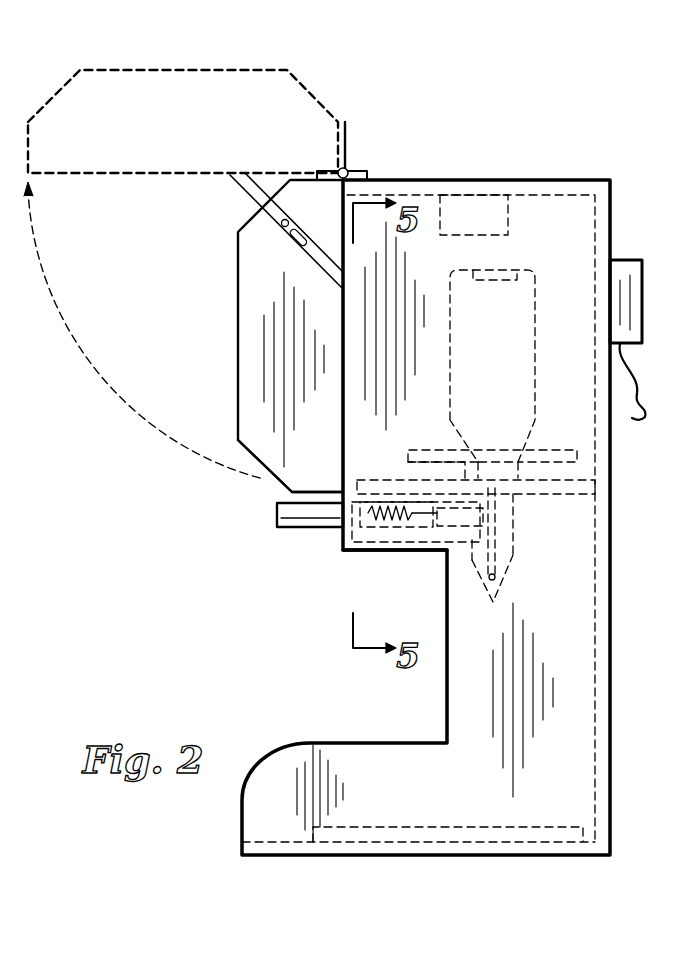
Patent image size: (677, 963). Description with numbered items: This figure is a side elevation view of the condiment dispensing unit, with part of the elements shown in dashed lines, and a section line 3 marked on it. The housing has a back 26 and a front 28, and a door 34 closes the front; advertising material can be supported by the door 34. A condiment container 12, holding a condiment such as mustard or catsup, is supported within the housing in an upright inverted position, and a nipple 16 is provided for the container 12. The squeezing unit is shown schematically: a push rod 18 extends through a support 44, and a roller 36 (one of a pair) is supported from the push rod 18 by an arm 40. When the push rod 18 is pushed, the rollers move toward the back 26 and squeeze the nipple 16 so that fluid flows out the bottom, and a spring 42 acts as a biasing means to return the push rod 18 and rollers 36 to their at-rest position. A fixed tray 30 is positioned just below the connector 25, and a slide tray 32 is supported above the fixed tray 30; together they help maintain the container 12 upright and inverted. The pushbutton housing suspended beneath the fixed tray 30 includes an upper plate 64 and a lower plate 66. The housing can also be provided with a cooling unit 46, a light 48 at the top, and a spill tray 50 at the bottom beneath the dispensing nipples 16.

The section line 3 is at (459, 555).
The condiment container 12 is at (507, 338).
The nipple 16 is at (505, 523).
The push rod 18 is at (290, 528).
The connector 25 is at (515, 467).
The back 26 is at (615, 635).
The front 28 is at (342, 427).
The fixed tray 30 is at (572, 496).
The slide tray 32 is at (565, 458).
The door 34 is at (245, 280).
The roller 36 is at (458, 517).
The arm 40 is at (385, 533).
The spring 42 is at (367, 520).
The support 44 is at (423, 520).
The cooling unit 46 is at (632, 270).
The light 48 is at (487, 203).
The spill tray 50 is at (440, 833).
The upper plate 64 is at (432, 480).
The lower plate 66 is at (480, 545).